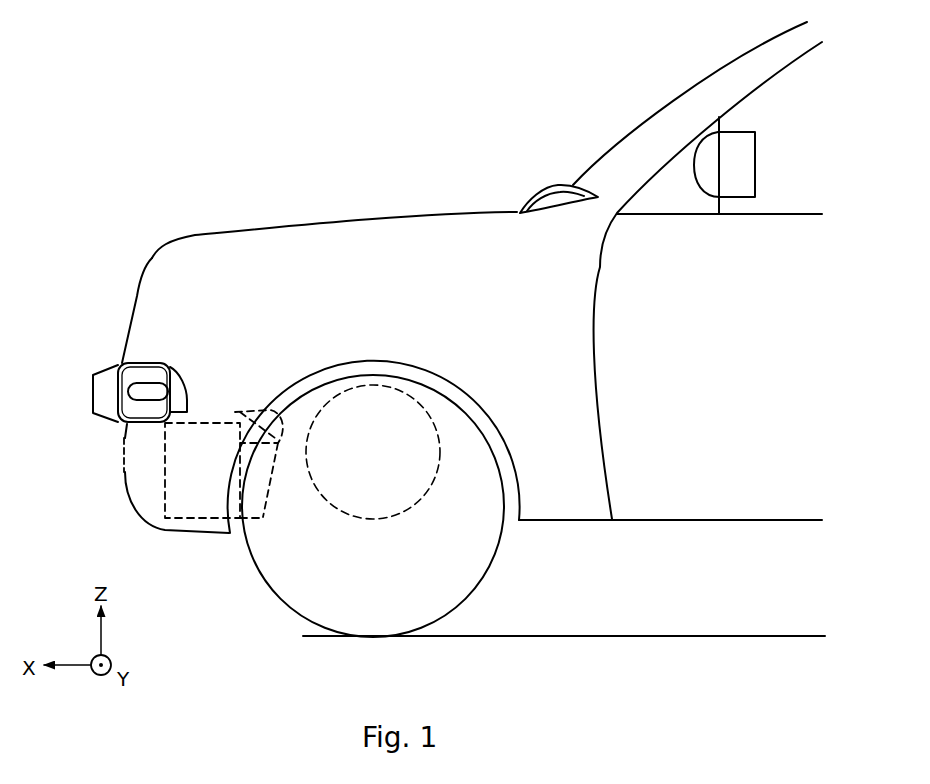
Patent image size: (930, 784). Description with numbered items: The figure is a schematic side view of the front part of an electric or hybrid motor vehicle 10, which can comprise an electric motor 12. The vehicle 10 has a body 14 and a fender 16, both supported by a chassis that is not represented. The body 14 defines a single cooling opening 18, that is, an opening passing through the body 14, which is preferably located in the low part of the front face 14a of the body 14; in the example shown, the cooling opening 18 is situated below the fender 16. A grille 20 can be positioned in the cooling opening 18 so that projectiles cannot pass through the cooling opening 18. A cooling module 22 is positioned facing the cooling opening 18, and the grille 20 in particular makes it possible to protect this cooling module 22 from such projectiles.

The motor vehicle 10 is at (190, 128).
The electric motor 12 is at (322, 497).
The body 14 is at (152, 257).
The front face 14a is at (136, 293).
The fender 16 is at (105, 385).
The cooling opening 18 is at (154, 470).
The grille 20 is at (123, 450).
The cooling module 22 is at (163, 481).